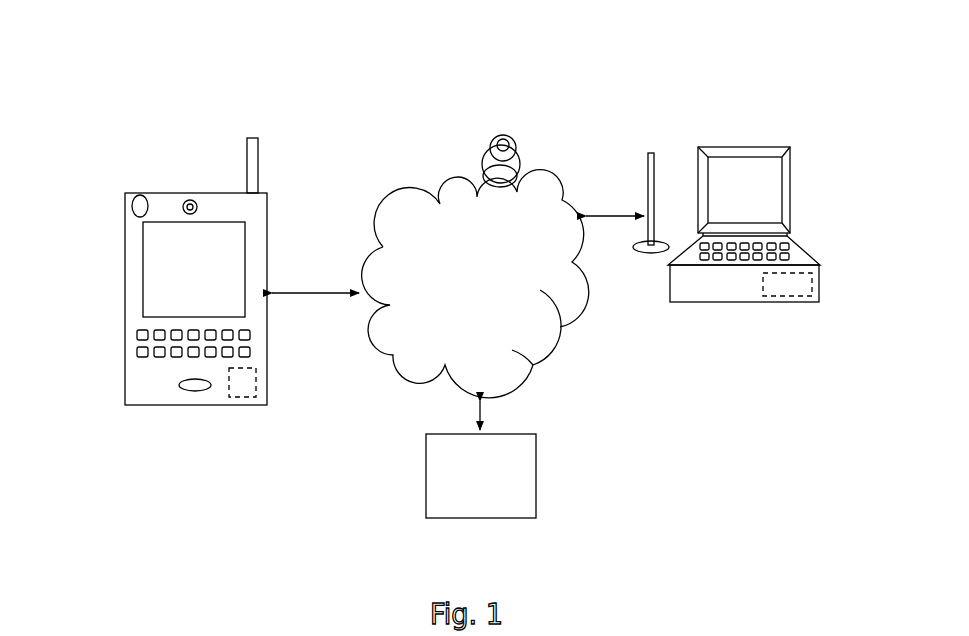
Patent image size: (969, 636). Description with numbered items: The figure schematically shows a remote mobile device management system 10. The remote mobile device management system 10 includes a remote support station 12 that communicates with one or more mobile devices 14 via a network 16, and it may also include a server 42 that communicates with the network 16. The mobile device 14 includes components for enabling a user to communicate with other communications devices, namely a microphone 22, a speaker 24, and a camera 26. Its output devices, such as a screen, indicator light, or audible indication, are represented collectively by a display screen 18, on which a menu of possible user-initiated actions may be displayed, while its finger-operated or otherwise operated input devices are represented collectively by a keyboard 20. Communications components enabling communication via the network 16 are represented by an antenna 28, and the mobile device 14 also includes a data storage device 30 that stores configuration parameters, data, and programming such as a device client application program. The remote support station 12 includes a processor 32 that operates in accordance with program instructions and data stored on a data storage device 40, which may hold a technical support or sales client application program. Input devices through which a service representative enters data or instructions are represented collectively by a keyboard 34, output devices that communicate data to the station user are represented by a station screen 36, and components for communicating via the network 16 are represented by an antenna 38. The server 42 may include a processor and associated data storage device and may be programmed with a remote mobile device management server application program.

The remote mobile device management system 10 is at (325, 42).
The remote support station 12 is at (779, 99).
The mobile device 14 is at (78, 141).
The network 16 is at (457, 178).
The display screen 18 is at (145, 283).
The keyboard 20 is at (138, 350).
The microphone 22 is at (182, 392).
The speaker 24 is at (132, 207).
The camera 26 is at (190, 204).
The antenna 28 is at (252, 140).
The data storage device 30 is at (232, 400).
The processor 32 is at (727, 298).
The keyboard 34 is at (790, 240).
The station screen 36 is at (783, 165).
The antenna 38 is at (648, 165).
The data storage device 40 is at (787, 298).
The server 42 is at (536, 470).